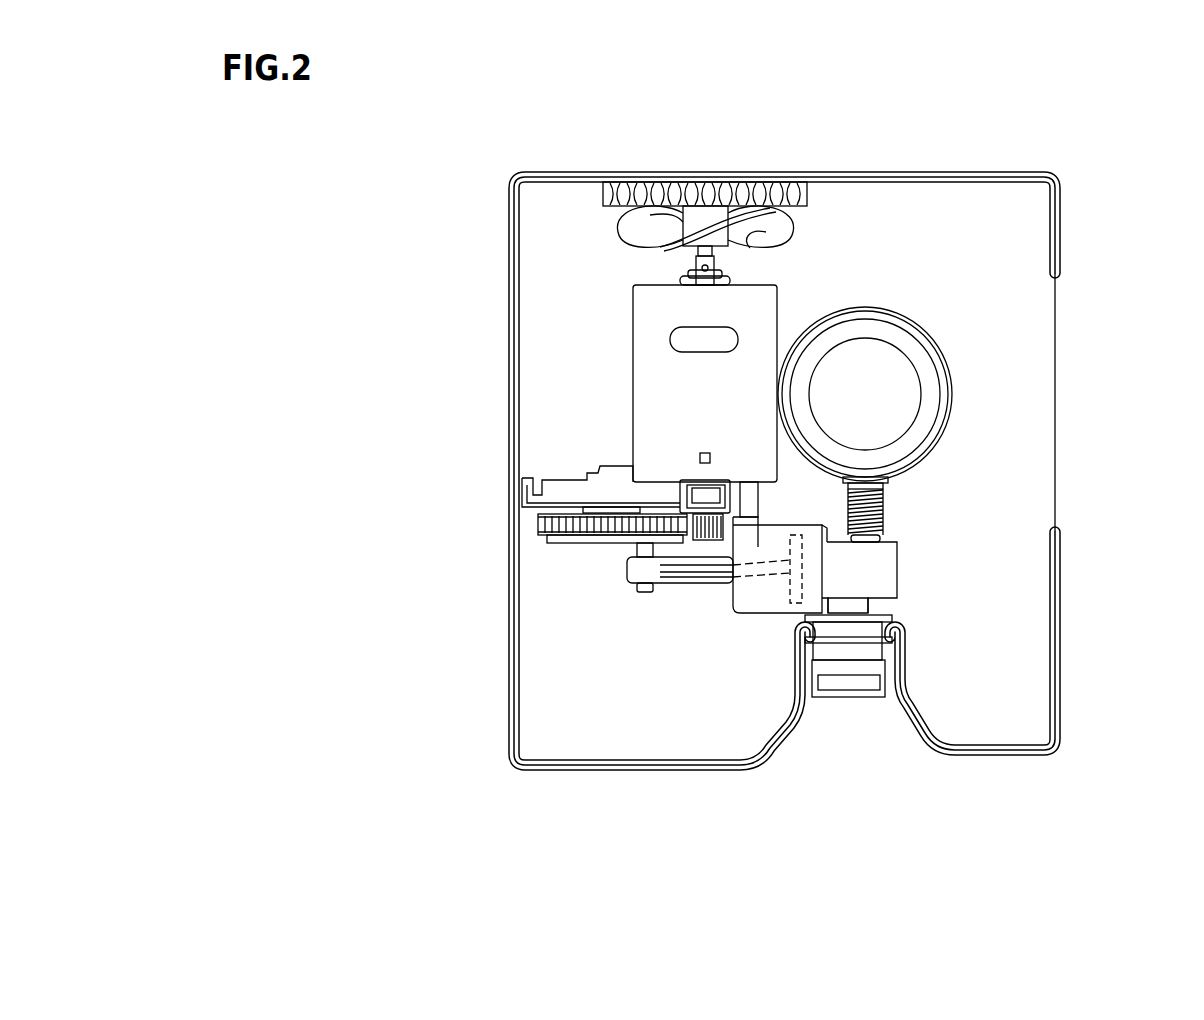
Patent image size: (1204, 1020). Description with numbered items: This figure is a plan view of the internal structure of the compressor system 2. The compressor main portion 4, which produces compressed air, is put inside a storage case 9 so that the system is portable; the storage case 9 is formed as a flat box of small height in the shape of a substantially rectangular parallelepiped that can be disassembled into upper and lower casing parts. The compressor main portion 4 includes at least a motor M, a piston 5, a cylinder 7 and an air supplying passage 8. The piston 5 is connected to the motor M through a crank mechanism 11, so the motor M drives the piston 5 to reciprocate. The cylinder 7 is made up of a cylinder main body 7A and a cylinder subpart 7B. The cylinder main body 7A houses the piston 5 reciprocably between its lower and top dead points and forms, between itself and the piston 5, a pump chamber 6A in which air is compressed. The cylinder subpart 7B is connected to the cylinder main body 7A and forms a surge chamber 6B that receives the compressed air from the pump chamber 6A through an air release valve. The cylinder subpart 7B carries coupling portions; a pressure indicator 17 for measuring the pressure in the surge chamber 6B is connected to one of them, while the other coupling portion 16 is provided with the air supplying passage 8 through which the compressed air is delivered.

The compressor system 2 is at (1067, 163).
The storage case 9 is at (1060, 235).
The motor M is at (658, 392).
The compressor main portion 4 is at (560, 440).
The crank mechanism 11 is at (617, 568).
The piston 5 is at (790, 570).
The pump chamber 6A is at (812, 585).
The surge chamber 6B is at (860, 573).
The cylinder 7 is at (920, 657).
The cylinder main body 7A is at (797, 520).
The cylinder subpart 7B is at (897, 570).
The pressure indicator 17 is at (933, 393).
The coupling portion 16 is at (867, 652).
The air supplying passage 8 is at (850, 690).